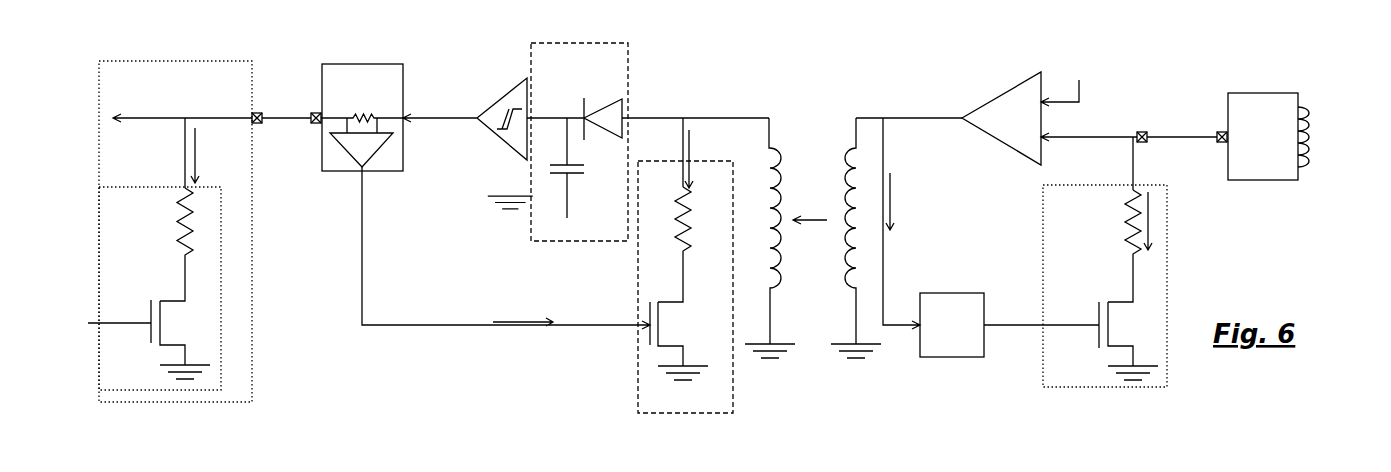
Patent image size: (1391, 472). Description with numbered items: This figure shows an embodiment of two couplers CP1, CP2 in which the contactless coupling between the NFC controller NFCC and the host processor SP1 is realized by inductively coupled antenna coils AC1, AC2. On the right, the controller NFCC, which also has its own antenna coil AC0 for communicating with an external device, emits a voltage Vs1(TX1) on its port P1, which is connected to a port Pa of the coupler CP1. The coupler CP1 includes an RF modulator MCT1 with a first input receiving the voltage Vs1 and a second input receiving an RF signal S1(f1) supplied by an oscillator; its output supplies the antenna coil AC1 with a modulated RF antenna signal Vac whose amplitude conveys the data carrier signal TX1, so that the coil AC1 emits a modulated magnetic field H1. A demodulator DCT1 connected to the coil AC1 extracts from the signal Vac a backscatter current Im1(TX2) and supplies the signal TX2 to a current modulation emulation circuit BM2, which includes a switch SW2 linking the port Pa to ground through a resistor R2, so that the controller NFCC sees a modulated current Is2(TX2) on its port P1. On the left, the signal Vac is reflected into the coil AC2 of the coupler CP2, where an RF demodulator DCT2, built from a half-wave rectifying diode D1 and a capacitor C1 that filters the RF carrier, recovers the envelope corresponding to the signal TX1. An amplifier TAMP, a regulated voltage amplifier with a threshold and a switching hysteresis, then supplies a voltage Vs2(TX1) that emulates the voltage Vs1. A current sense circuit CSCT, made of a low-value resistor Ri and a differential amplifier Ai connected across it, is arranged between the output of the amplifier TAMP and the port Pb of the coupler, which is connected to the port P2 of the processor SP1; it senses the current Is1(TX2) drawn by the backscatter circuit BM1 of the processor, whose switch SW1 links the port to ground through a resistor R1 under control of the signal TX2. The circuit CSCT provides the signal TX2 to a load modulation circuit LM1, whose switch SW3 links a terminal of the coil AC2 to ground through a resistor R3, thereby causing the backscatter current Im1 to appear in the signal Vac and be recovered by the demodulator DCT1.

The host processor SP1 is at (175, 231).
The backscatter circuit BM1 is at (160, 288).
The resistor R1 is at (171, 244).
The switch SW1 is at (151, 340).
The signal TX2 is at (536, 249).
The port P2 is at (259, 113).
The current sense circuit CSCT is at (362, 117).
The resistor Ri is at (362, 115).
The differential amplifier Ai is at (361, 150).
The port Pb is at (316, 126).
The amplifier TAMP is at (510, 90).
The RF demodulator DCT2 is at (579, 142).
The half-wave rectifying diode D1 is at (612, 100).
The capacitor C1 is at (549, 168).
The load modulation circuit LM1 is at (685, 287).
The resistor R3 is at (687, 244).
The switch SW3 is at (650, 338).
The antenna coil AC2 is at (778, 148).
The antenna coil AC1 is at (847, 148).
The magnetic field H1 is at (810, 211).
The RF modulator MCT1 is at (1001, 118).
The RF signal S1 is at (1071, 81).
The port Pa is at (1138, 131).
The switch SW2 is at (1099, 340).
The port P1 is at (1218, 131).
The controller NFCC is at (1263, 136).
The antenna coil AC0 is at (1317, 108).
The current modulation emulation circuit BM2 is at (1105, 286).
The resistor R2 is at (1120, 246).
The demodulator DCT1 is at (952, 325).
The coupler CP1 is at (1003, 385).
The coupler CP2 is at (473, 367).
The voltage Vs2 is at (182, 110).
The current Is1 is at (223, 153).
The backscatter current Im1 is at (823, 223).
The RF antenna signal Vac is at (797, 107).
The voltage Vs1 is at (1089, 129).
The modulated current Is2 is at (1174, 193).